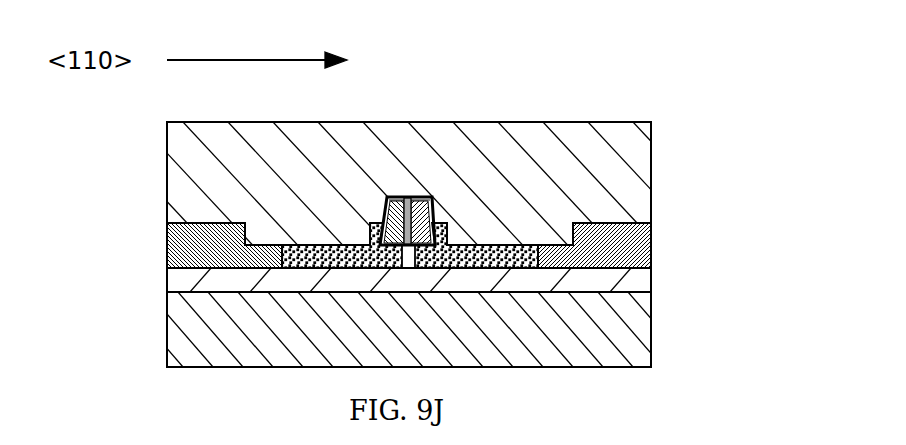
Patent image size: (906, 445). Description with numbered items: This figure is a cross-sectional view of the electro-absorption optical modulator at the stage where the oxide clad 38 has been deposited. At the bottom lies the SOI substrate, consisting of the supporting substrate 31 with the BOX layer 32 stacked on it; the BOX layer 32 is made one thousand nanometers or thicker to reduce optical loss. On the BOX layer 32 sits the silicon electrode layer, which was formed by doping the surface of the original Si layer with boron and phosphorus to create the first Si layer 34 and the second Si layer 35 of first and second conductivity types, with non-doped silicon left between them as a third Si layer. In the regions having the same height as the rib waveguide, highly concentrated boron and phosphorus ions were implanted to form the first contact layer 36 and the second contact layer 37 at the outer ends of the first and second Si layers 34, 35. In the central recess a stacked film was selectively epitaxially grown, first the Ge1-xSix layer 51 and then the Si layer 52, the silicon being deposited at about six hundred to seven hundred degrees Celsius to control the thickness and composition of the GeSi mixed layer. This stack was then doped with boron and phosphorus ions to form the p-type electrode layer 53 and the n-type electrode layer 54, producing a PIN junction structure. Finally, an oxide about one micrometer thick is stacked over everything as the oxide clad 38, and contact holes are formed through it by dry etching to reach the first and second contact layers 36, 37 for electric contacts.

The supporting substrate 31 is at (635, 328).
The BOX layer 32 is at (634, 282).
The first Si layer 34 is at (308, 253).
The second Si layer 35 is at (480, 253).
The first contact layer 36 is at (178, 243).
The second contact layer 37 is at (627, 248).
The oxide clad 38 is at (548, 158).
The Ge1-xSix layer 51 is at (408, 200).
The Si layer 52 is at (431, 215).
The p-type electrode layer 53 is at (385, 203).
The n-type electrode layer 54 is at (440, 220).